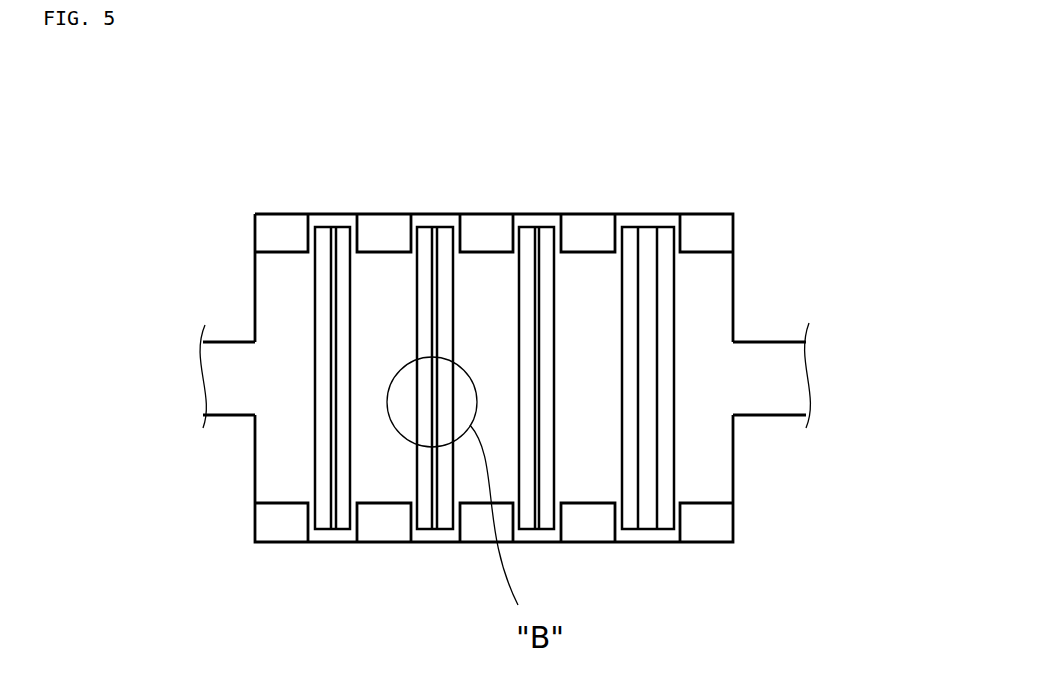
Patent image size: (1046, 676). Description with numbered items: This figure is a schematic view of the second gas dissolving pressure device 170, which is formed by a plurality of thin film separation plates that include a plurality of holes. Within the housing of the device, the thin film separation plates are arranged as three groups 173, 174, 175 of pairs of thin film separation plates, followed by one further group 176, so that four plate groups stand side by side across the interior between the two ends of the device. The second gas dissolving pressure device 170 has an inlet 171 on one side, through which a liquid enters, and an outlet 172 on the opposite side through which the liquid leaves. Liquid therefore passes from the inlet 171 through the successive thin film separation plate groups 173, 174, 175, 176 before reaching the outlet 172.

The second gas dissolving pressure device 170 is at (255, 472).
The inlet 171 is at (165, 377).
The outlet 172 is at (825, 377).
The group of pairs of thin film separation plates 173 is at (352, 278).
The group of pairs of thin film separation plates 174 is at (453, 278).
The group of pairs of thin film separation plates 175 is at (554, 278).
The group of thin film separation plates 176 is at (674, 278).